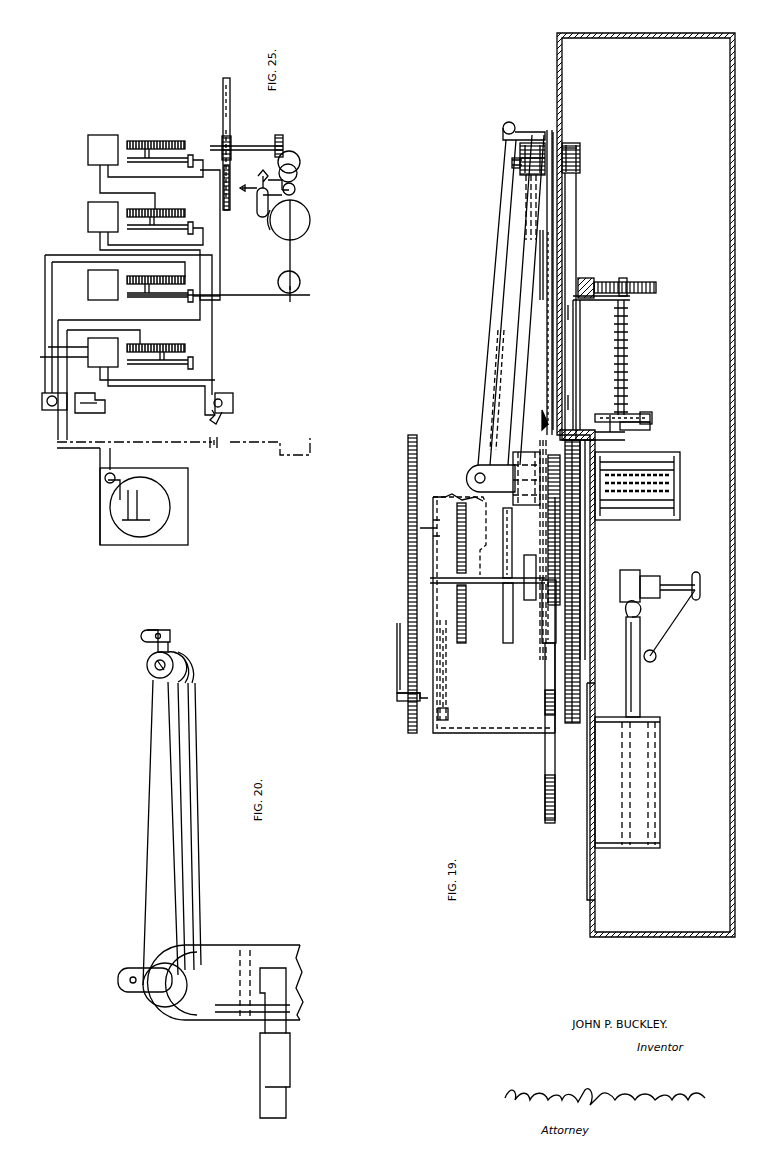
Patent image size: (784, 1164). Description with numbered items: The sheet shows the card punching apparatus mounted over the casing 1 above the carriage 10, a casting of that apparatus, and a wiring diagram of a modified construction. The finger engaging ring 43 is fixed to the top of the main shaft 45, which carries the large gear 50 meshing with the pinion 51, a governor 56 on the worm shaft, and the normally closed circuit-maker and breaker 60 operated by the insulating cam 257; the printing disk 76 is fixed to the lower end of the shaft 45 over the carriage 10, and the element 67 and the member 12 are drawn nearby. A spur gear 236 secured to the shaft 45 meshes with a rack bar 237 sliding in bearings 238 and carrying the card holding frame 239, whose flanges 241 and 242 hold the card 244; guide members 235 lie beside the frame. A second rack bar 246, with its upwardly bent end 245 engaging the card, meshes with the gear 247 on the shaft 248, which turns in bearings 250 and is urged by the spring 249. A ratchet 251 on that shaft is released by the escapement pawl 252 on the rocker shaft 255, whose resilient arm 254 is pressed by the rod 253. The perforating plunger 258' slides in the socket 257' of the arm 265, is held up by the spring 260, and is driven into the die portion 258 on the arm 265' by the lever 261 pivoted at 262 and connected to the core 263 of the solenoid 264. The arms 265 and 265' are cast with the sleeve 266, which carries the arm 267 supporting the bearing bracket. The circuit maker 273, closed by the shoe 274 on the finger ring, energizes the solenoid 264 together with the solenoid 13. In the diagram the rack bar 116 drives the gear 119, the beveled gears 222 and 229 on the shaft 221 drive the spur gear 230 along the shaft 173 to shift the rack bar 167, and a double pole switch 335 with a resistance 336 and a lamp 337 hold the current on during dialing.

In FIG. 19, the casing 1 is at (589, 928).
In FIG. 19, the carriage 10 is at (588, 838).
In FIG. 19, the lever arm 12 is at (632, 652).
In FIG. 19, the solenoid 13 is at (648, 760).
In FIG. 19, the finger engaging ring 43 is at (411, 440).
In FIG. 19, the main shaft 45 is at (427, 578).
In FIG. 19, the large gear 50 is at (462, 648).
In FIG. 19, the pinion 51 is at (460, 512).
In FIG. 19, the governor 56 is at (505, 530).
In FIG. 19, the circuit-maker and breaker 60 is at (505, 635).
In FIG. 19, the block 67 is at (525, 569).
In FIG. 19, the printing disk 76 is at (572, 725).
In FIG. 25, the rack bar 116 is at (258, 302).
In FIG. 25, the gear 119 is at (300, 284).
In FIG. 25, the rack bar 167 is at (224, 185).
In FIG. 25, the shaft 173 is at (226, 80).
In FIG. 25, the shaft 221 is at (300, 228).
In FIG. 25, the beveled gear 222 is at (300, 160).
In FIG. 25, the beveled gear 229 is at (280, 135).
In FIG. 25, the spur gear 230 is at (222, 142).
In FIG. 19, the guide plate 235 is at (548, 134).
In FIG. 19, the spur gear 236 is at (549, 612).
In FIG. 19, the rack bar 237 is at (545, 760).
In FIG. 19, the bearings 238 is at (548, 645).
In FIG. 20, the bearings 238 is at (288, 1075).
In FIG. 19, the card holding frame 239 is at (555, 130).
In FIG. 19, the flange 241 is at (566, 152).
In FIG. 19, the flange 242 is at (546, 418).
In FIG. 19, the card 244 is at (549, 233).
In FIG. 19, the upwardly bent end 245 is at (540, 278).
In FIG. 19, the rack bar 246 is at (592, 290).
In FIG. 19, the gear 247 is at (642, 288).
In FIG. 19, the shaft 248 is at (623, 285).
In FIG. 19, the spring 249 is at (628, 335).
In FIG. 19, the bearings 250 is at (580, 326).
In FIG. 19, the ratchet 251 is at (654, 430).
In FIG. 19, the escapement pawl 252 is at (632, 415).
In FIG. 19, the rod 253 is at (501, 390).
In FIG. 19, the arm 254 is at (612, 428).
In FIG. 19, the rocker shaft 255 is at (628, 436).
In FIG. 19, the cam 257 is at (658, 400).
In FIG. 19, the socket 257' is at (494, 171).
In FIG. 20, the socket 257' is at (145, 645).
In FIG. 19, the die lower portion 258 is at (595, 156).
In FIG. 20, the die lower portion 258 is at (186, 654).
In FIG. 19, the card perforating plunger 258' is at (500, 149).
In FIG. 20, the card perforating plunger 258' is at (149, 684).
In FIG. 19, the spring 260 is at (530, 180).
In FIG. 19, the lever 261 is at (497, 228).
In FIG. 19, the pivot 262 is at (505, 122).
In FIG. 19, the core 263 is at (474, 470).
In FIG. 20, the core 263 is at (133, 995).
In FIG. 19, the solenoid 264 is at (656, 520).
In FIG. 20, the solenoid 264 is at (232, 1020).
In FIG. 19, the arm 265 is at (500, 300).
In FIG. 20, the arm 265 is at (150, 832).
In FIG. 19, the arm 265' is at (585, 305).
In FIG. 20, the arm 265' is at (198, 826).
In FIG. 19, the sleeve 266 is at (525, 500).
In FIG. 20, the sleeve 266 is at (168, 1007).
In FIG. 20, the arm 267 is at (246, 968).
In FIG. 19, the circuit maker 273 is at (444, 722).
In FIG. 19, the abutment lug or shoe 274 is at (420, 528).
In FIG. 25, the abutment lug or shoe 274 is at (45, 405).
In FIG. 25, the double pole switch 335 is at (88, 405).
In FIG. 25, the resistance 336 is at (222, 420).
In FIG. 25, the lamp 337 is at (235, 400).